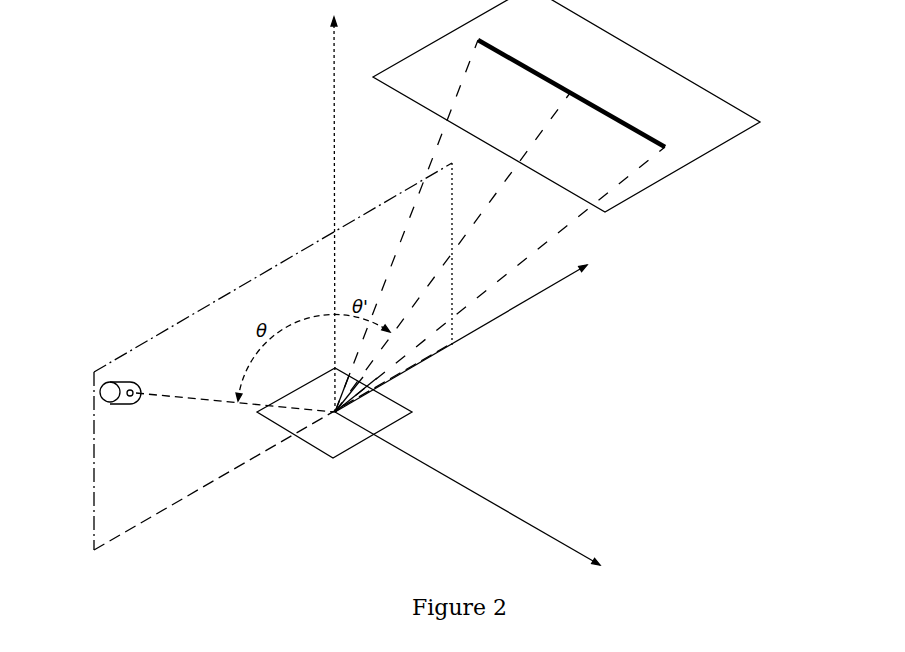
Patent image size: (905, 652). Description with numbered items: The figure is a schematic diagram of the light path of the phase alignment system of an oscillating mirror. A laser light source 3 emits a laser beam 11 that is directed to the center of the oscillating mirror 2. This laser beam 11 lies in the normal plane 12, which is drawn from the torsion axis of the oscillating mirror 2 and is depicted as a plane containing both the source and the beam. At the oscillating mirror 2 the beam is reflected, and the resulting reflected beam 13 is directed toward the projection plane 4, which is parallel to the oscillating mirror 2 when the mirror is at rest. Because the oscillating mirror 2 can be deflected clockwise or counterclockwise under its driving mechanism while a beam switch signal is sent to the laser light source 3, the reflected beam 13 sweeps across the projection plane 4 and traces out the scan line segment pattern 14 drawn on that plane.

The oscillating mirror 2 is at (334, 443).
The laser light source 3 is at (94, 363).
The projection plane 4 is at (598, 106).
The laser beam 11 is at (235, 427).
The normal plane 12 is at (273, 356).
The reflected beam 13 is at (553, 226).
The scan line segment pattern 14 is at (630, 73).